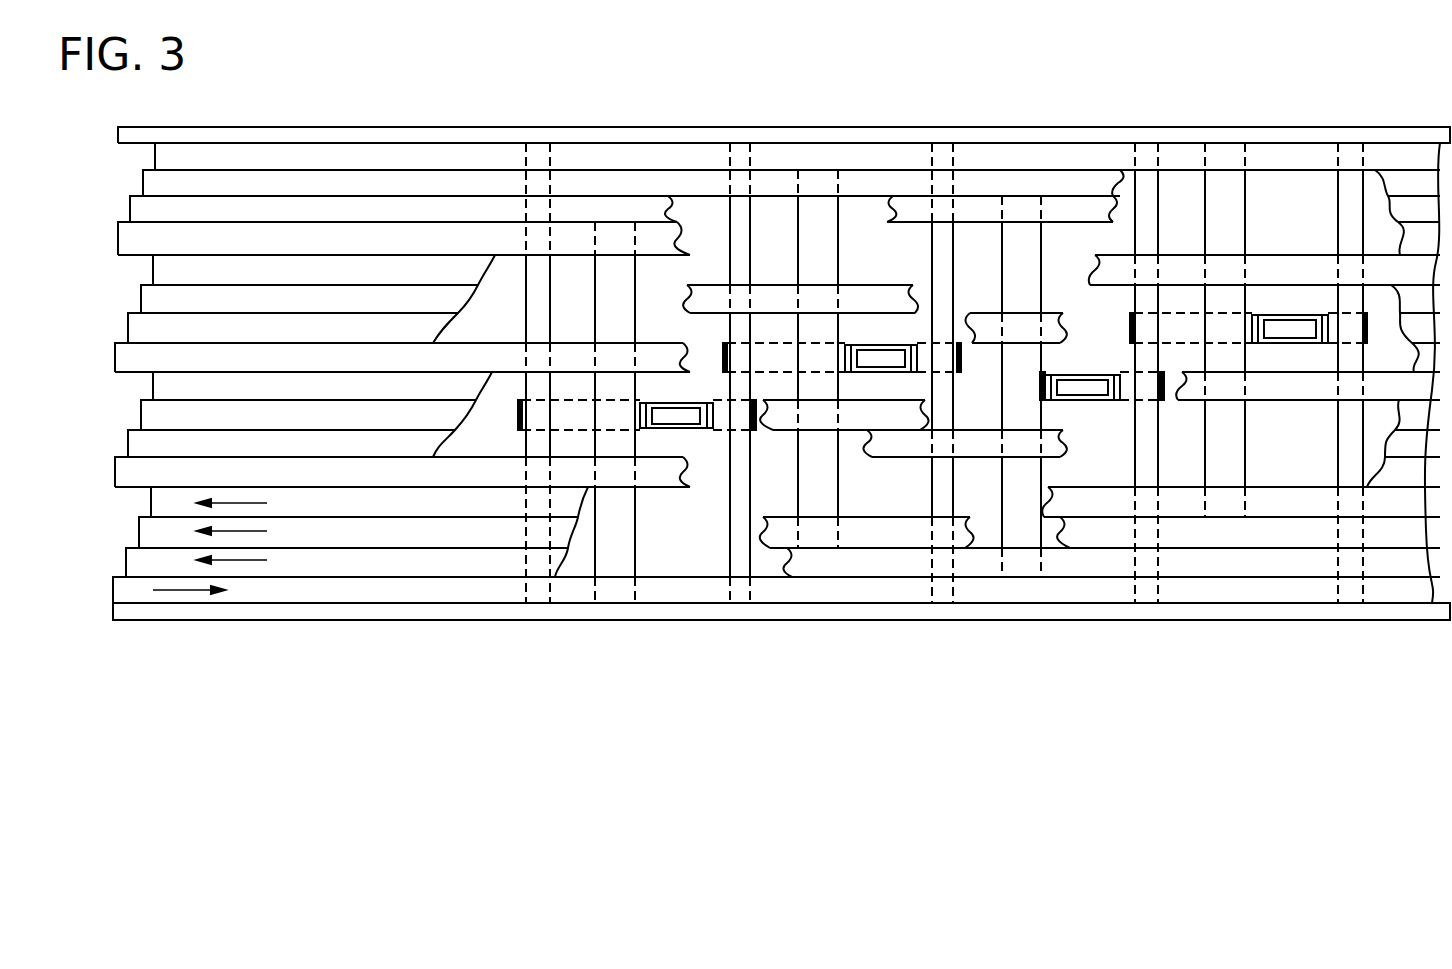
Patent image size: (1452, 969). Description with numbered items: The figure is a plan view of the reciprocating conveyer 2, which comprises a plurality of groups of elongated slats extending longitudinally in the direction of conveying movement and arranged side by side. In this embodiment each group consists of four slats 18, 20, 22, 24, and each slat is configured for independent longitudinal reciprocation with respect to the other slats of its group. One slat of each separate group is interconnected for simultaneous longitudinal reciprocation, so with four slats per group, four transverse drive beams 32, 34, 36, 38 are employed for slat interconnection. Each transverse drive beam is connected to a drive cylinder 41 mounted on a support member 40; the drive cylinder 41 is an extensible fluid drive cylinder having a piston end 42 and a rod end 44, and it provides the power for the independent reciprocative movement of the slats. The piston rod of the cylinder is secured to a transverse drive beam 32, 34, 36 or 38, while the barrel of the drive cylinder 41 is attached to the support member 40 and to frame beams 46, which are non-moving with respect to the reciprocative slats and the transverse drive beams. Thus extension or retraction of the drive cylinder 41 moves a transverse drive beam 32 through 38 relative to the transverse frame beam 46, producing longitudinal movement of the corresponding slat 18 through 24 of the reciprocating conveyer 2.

The reciprocating conveyer 2 is at (660, 96).
The slat 18 is at (118, 242).
The slat 20 is at (128, 212).
The slat 22 is at (141, 183).
The slat 24 is at (153, 157).
The transverse drive beam 32 is at (623, 550).
The transverse drive beam 34 is at (823, 494).
The transverse drive beam 36 is at (1033, 465).
The transverse drive beam 38 is at (1237, 443).
The support member 40 is at (674, 411).
The drive cylinder 41 is at (684, 402).
The piston end 42 is at (712, 430).
The rod end 44 is at (650, 430).
The frame beam 46 is at (728, 595).